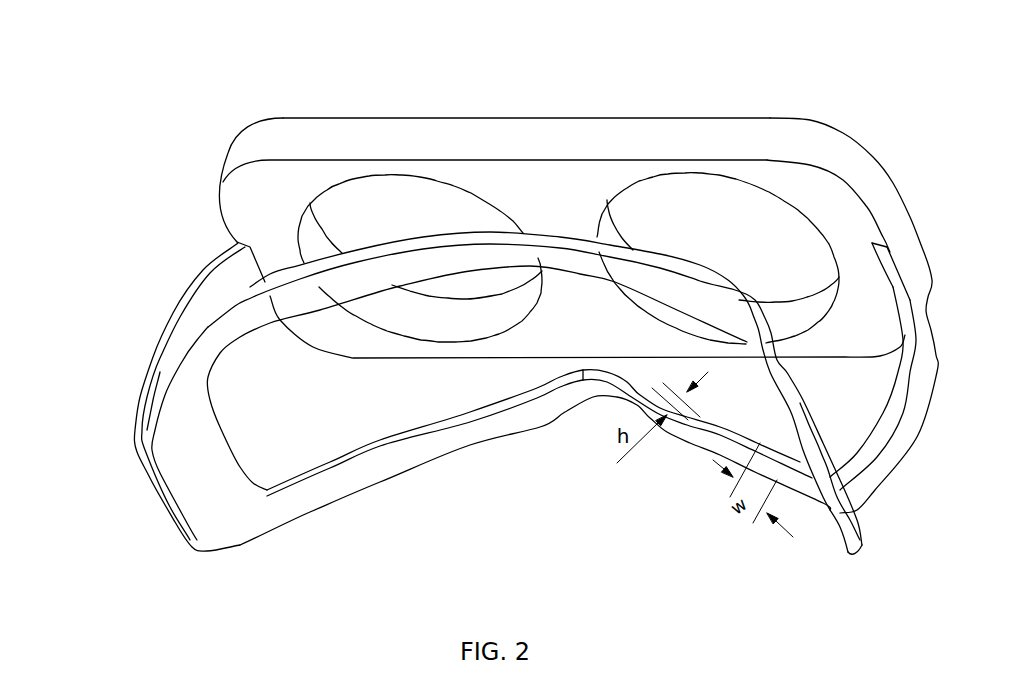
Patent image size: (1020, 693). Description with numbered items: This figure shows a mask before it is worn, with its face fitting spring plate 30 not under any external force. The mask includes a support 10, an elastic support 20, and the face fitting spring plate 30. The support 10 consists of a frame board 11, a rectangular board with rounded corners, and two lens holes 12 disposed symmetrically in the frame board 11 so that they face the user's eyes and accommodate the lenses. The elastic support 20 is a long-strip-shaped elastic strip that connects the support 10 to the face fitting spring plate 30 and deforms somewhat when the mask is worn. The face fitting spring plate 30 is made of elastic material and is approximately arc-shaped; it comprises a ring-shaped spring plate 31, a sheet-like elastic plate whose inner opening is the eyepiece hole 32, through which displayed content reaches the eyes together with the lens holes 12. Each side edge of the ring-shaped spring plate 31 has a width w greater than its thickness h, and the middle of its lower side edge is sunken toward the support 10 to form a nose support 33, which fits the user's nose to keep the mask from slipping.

The support 10 is at (561, 270).
The frame board 11 is at (372, 140).
The lens holes 12 is at (480, 200).
The elastic support 20 is at (192, 295).
The face fitting spring plate 30 is at (447, 427).
The ring-shaped spring plate 31 is at (325, 485).
The eyepiece hole 32 is at (448, 388).
The nose support 33 is at (590, 390).